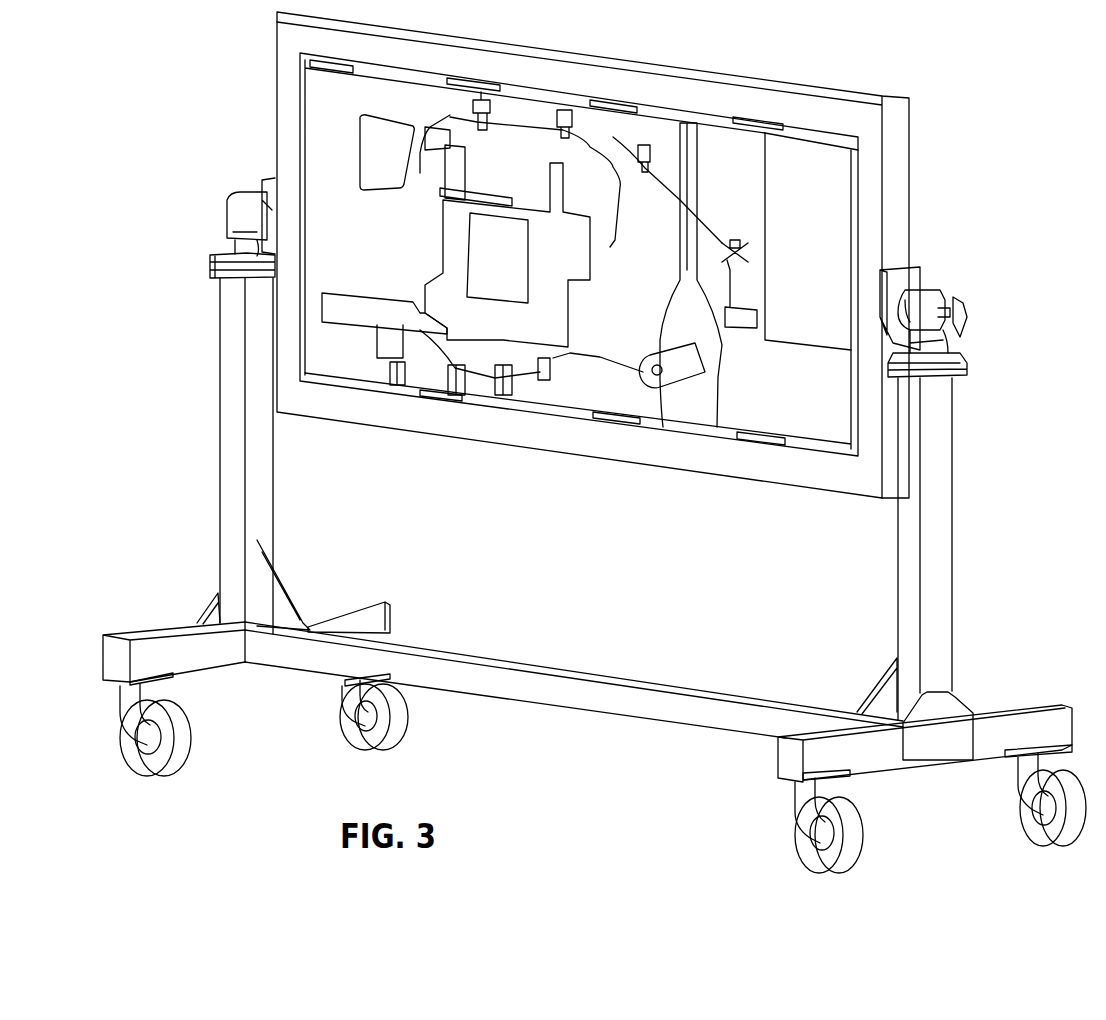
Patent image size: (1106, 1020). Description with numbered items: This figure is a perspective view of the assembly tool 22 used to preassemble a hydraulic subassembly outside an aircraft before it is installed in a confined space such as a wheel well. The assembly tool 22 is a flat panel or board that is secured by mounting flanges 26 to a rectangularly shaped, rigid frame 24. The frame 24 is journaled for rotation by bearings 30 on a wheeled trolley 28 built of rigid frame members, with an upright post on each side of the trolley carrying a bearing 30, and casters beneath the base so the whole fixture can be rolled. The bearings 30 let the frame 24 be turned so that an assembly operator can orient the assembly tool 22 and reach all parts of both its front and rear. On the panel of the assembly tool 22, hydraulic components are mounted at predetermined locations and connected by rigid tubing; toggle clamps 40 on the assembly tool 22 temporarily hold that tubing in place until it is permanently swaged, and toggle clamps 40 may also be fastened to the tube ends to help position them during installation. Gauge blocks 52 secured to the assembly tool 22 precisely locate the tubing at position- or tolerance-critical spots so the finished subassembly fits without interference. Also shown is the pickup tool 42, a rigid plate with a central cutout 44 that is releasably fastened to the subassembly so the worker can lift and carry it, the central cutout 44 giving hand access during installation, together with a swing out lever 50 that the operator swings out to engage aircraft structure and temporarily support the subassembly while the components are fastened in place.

The assembly tool 22 is at (663, 140).
The frame 24 is at (772, 110).
The mounting flanges 26 is at (478, 72).
The wheeled trolley 28 is at (237, 462).
The bearings 30 is at (233, 207).
The toggle clamps 40 is at (745, 252).
The pickup tool 42 is at (358, 313).
The central cutout 44 is at (487, 296).
The swing out lever 50 is at (455, 135).
The gauge blocks 52 is at (660, 380).